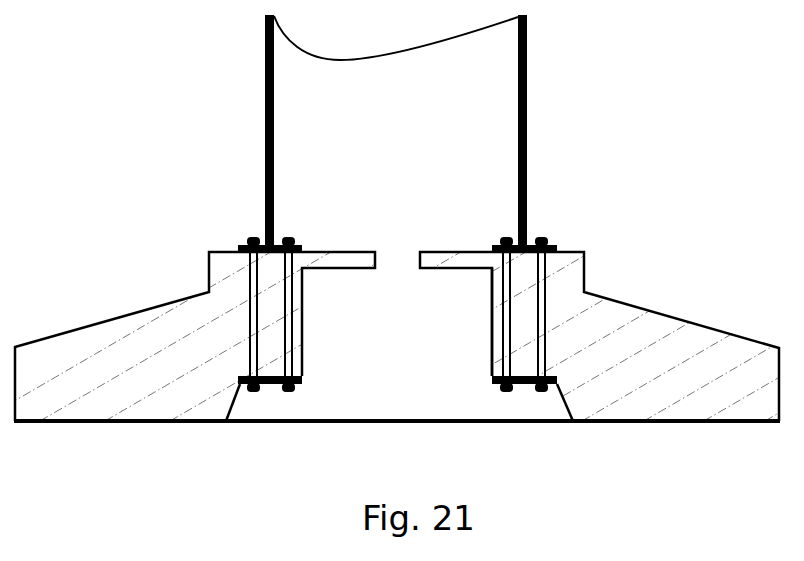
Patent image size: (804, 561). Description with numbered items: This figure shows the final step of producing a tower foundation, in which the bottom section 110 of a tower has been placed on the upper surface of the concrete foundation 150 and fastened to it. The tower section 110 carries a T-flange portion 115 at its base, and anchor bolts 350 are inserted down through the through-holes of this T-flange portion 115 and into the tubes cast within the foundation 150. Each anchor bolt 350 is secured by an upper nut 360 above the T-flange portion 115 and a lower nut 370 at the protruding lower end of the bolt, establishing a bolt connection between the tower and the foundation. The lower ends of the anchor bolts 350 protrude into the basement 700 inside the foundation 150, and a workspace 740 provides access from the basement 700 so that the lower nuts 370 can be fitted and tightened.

The bottom section of a tower 110 is at (266, 160).
The T-flange portion 115 is at (253, 229).
The foundation 150 is at (665, 342).
The anchor bolt 350 is at (490, 285).
The upper nut 360 is at (502, 240).
The lower nut 370 is at (500, 386).
The basement 700 is at (377, 365).
The workspace 740 is at (270, 404).